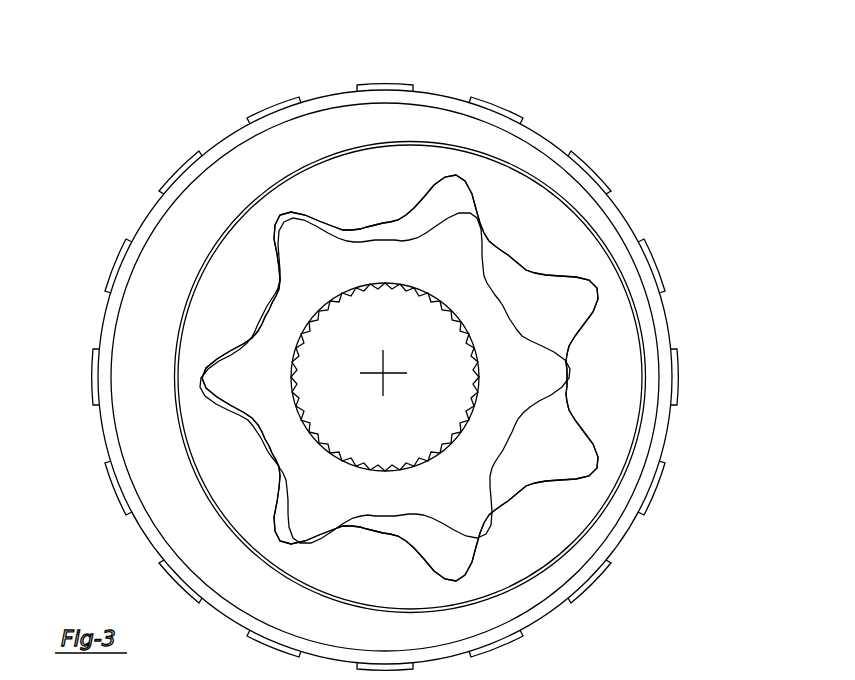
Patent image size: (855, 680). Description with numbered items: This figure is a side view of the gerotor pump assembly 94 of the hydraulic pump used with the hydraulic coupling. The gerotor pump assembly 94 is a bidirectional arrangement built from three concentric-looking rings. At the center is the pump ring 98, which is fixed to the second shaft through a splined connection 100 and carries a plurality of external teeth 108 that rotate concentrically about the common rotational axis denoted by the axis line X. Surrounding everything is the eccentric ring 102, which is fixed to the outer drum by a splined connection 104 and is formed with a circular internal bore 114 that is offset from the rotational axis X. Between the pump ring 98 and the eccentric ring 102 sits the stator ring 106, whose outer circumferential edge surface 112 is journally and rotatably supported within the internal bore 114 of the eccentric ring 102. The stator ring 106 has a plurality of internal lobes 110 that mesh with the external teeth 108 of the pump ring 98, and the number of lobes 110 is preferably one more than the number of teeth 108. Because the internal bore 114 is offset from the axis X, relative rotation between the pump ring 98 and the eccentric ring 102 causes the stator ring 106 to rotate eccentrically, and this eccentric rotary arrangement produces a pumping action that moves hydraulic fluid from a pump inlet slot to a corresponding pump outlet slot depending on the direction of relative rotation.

The gerotor pump assembly 94 is at (433, 342).
The pump ring 98 is at (451, 358).
The splined connection 100 is at (336, 296).
The eccentric ring 102 is at (426, 365).
The splined connection 104 is at (662, 477).
The stator ring 106 is at (474, 314).
The external teeth 108 is at (553, 383).
The internal lobes 110 is at (527, 512).
The outer circumferential edge surface 112 is at (645, 394).
The internal bore 114 is at (628, 292).
The rotational axis X is at (385, 373).